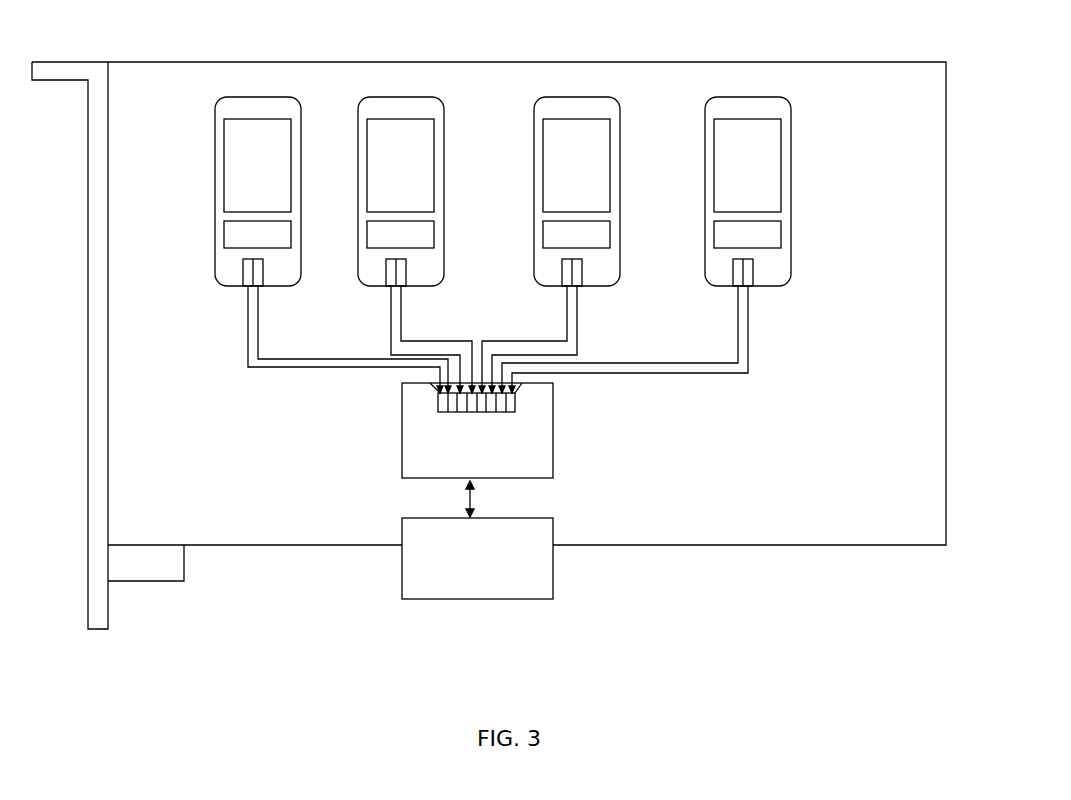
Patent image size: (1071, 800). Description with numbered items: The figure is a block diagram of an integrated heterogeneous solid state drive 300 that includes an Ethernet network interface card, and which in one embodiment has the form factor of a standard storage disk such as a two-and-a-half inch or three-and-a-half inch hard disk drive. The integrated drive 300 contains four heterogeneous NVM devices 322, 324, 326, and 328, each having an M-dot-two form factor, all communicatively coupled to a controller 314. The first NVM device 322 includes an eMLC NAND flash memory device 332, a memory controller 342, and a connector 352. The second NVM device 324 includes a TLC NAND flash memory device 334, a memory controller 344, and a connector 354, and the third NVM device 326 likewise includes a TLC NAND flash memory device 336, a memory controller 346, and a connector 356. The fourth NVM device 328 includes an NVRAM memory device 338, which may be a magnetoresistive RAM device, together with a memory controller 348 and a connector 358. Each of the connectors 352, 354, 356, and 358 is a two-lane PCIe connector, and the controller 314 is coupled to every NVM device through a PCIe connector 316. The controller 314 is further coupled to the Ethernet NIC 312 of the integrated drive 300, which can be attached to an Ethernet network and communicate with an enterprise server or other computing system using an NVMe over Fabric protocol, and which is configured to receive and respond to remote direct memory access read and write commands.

The integrated heterogeneous solid state drive 300 is at (625, 545).
The Ethernet network interface card 312 is at (497, 599).
The controller 314 is at (553, 447).
The PCIe connector 316 is at (516, 397).
The NVM device 322 is at (229, 191).
The NVM device 324 is at (377, 191).
The NVM device 326 is at (553, 191).
The NVM device 328 is at (720, 191).
The eMLC NAND flash memory device 332 is at (215, 165).
The TLC NAND flash memory device 334 is at (358, 153).
The TLC NAND flash memory device 336 is at (534, 158).
The NVRAM memory device 338 is at (705, 160).
The memory controller 342 is at (215, 229).
The memory controller 344 is at (358, 229).
The memory controller 346 is at (534, 229).
The memory controller 348 is at (705, 229).
The connector 352 is at (243, 272).
The connector 354 is at (386, 272).
The connector 356 is at (562, 272).
The connector 358 is at (733, 272).